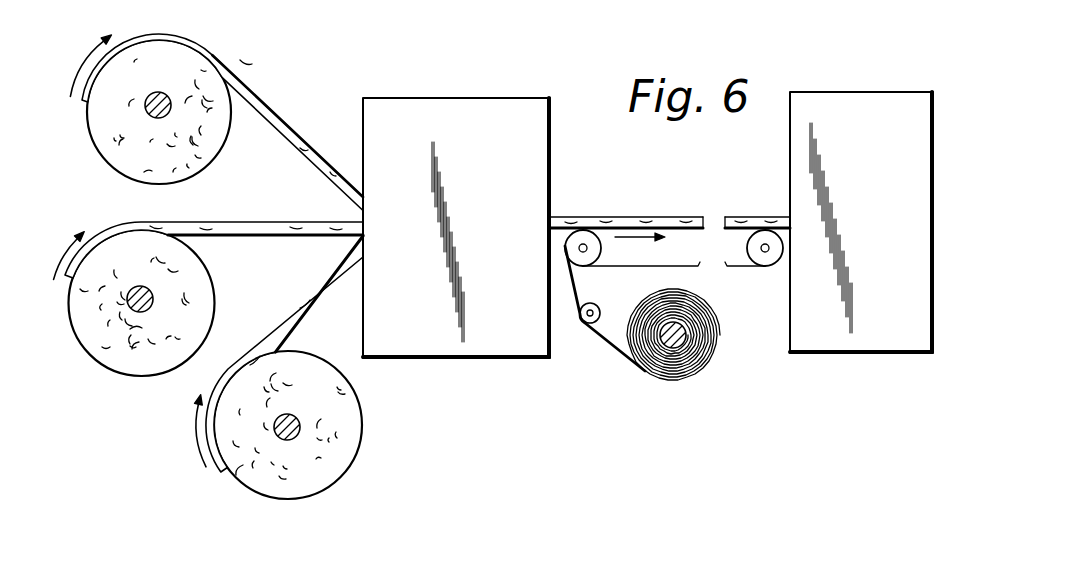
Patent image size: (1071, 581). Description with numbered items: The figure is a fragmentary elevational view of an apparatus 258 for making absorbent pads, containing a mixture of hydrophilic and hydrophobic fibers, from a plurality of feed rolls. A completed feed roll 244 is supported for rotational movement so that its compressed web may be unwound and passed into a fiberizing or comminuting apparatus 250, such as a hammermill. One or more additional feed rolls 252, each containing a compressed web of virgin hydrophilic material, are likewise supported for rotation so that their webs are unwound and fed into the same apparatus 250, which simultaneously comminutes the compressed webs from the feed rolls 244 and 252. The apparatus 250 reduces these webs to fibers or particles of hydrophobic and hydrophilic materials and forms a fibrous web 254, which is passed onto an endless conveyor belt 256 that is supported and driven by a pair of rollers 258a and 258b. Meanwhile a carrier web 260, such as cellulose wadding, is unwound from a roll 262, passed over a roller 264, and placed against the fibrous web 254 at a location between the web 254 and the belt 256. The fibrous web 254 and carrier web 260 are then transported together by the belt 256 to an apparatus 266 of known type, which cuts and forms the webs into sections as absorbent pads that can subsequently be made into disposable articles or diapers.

The completed feed roll 244 is at (113, 344).
The additional feed roll 252 is at (143, 149).
The fiberizing or comminuting apparatus 250 is at (492, 97).
The apparatus 258 is at (414, 92).
The fibrous web 254 is at (571, 217).
The roller 258a is at (602, 247).
The roller 258b is at (747, 252).
The endless conveyor belt 256 is at (745, 267).
The roller 264 is at (617, 291).
The carrier web 260 is at (601, 340).
The roll 262 is at (700, 373).
The apparatus 266 is at (850, 92).